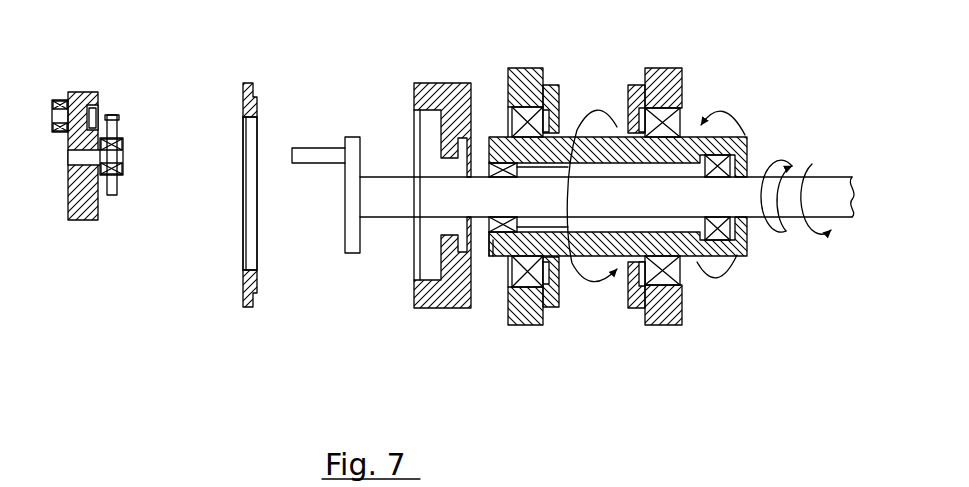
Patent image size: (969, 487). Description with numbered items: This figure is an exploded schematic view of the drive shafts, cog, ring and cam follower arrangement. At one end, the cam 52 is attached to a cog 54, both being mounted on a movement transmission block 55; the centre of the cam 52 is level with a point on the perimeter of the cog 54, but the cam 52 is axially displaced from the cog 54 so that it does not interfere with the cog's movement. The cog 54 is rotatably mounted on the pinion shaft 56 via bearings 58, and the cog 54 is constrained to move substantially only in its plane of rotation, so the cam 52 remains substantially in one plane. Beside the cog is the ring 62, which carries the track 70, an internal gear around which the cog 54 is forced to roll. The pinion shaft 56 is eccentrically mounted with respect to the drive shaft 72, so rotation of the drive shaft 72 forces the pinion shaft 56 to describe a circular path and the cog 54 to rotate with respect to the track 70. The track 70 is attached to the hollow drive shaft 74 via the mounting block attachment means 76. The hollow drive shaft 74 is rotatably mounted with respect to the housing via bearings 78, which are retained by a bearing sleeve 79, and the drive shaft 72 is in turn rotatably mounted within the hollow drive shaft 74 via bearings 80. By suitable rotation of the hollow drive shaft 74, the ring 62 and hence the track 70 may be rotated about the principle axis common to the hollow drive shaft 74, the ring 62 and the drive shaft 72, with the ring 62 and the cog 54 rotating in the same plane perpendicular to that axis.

The cam 52 is at (49, 113).
The cog 54 is at (120, 126).
The movement transmission block 55 is at (66, 221).
The pinion shaft 56 is at (292, 144).
The bearings 58 is at (128, 172).
The ring 62 is at (240, 79).
The track 70 is at (241, 269).
The drive shaft 72 is at (851, 180).
The hollow drive shaft 74 is at (597, 133).
The mounting block attachment means 76 is at (421, 310).
The bearings 78 is at (544, 274).
The bearing sleeve 79 is at (493, 260).
The bearings 80 is at (494, 160).